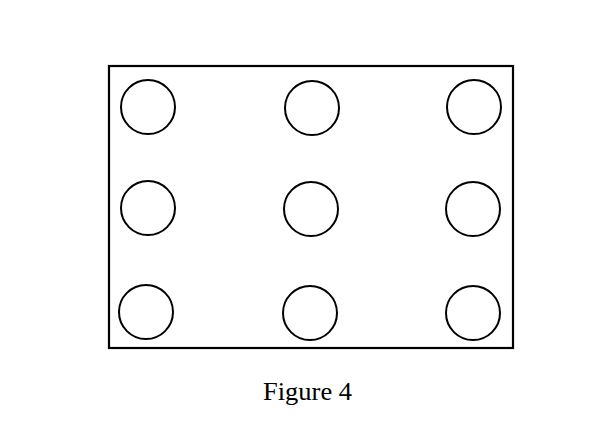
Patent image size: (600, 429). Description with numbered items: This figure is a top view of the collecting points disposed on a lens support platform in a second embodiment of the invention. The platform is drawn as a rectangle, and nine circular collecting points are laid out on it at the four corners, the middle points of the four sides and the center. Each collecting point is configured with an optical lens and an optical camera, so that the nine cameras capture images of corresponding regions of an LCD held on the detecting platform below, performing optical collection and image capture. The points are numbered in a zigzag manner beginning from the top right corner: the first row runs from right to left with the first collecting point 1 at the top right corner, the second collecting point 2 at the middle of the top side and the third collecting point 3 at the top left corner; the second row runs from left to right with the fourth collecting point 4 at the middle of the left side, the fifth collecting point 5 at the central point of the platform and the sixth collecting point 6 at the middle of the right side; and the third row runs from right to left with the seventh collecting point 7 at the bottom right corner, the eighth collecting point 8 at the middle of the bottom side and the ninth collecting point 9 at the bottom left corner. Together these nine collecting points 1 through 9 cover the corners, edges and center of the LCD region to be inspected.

The first collecting point 1 is at (474, 107).
The second collecting point 2 is at (312, 108).
The third collecting point 3 is at (148, 107).
The fourth collecting point 4 is at (148, 208).
The fifth collecting point 5 is at (311, 209).
The sixth collecting point 6 is at (473, 209).
The seventh collecting point 7 is at (473, 313).
The eighth collecting point 8 is at (310, 313).
The ninth collecting point 9 is at (146, 312).